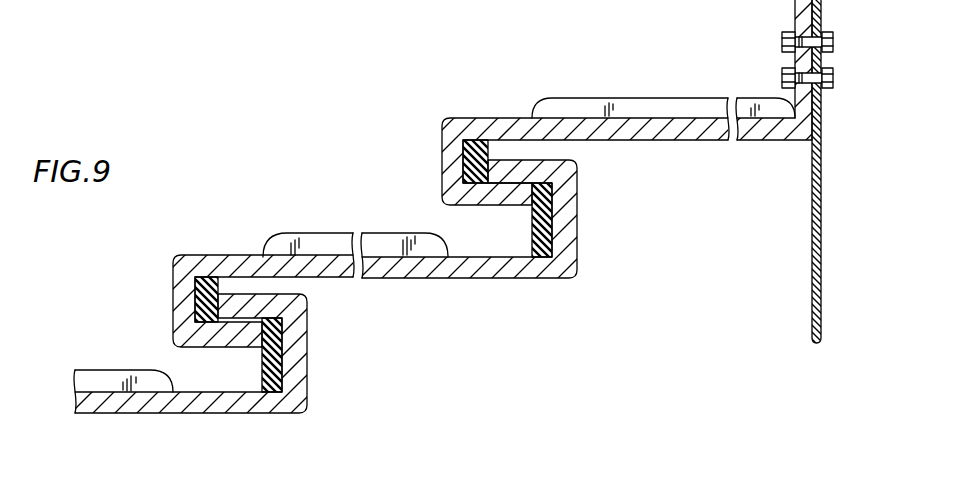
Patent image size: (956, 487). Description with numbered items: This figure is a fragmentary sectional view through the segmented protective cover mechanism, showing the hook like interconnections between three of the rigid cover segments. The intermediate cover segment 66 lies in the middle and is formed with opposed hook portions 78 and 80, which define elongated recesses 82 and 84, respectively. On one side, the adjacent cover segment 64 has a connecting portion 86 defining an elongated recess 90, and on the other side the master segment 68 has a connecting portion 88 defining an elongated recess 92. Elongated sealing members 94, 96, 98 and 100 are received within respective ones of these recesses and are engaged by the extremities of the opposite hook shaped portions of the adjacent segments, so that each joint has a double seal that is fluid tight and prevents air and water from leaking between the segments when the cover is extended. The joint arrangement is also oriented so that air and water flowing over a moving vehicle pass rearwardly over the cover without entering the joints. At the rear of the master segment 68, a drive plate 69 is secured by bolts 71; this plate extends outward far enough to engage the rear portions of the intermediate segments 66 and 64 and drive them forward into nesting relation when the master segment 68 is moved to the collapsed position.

The cover segment 64 is at (96, 400).
The cover segment 66 is at (318, 248).
The master segment 68 is at (670, 128).
The drive plate 69 is at (812, 298).
The bolts 71 is at (783, 76).
The hook portion 78 is at (178, 298).
The hook portion 80 is at (575, 221).
The elongated recess 82 is at (233, 285).
The elongated recess 84 is at (521, 248).
The connecting portion 86 is at (300, 372).
The connecting portion 88 is at (447, 150).
The elongated recess 90 is at (243, 380).
The elongated recess 92 is at (508, 146).
The elongated sealing member 94 is at (203, 283).
The elongated sealing member 96 is at (272, 340).
The elongated sealing member 98 is at (535, 230).
The elongated sealing member 100 is at (478, 142).